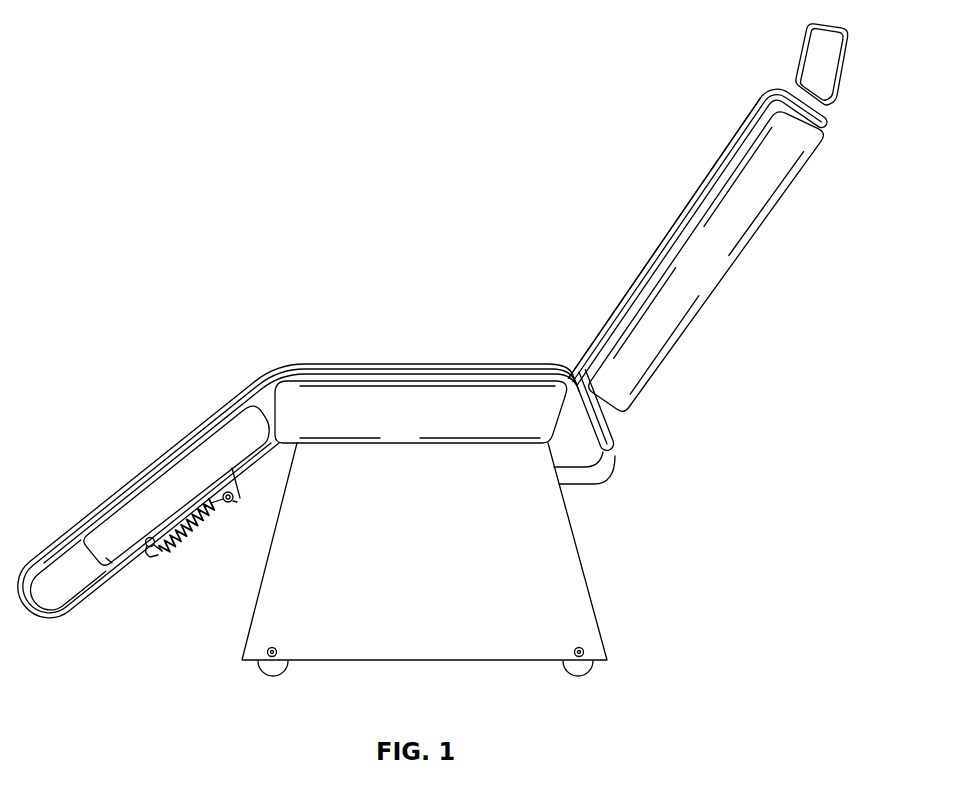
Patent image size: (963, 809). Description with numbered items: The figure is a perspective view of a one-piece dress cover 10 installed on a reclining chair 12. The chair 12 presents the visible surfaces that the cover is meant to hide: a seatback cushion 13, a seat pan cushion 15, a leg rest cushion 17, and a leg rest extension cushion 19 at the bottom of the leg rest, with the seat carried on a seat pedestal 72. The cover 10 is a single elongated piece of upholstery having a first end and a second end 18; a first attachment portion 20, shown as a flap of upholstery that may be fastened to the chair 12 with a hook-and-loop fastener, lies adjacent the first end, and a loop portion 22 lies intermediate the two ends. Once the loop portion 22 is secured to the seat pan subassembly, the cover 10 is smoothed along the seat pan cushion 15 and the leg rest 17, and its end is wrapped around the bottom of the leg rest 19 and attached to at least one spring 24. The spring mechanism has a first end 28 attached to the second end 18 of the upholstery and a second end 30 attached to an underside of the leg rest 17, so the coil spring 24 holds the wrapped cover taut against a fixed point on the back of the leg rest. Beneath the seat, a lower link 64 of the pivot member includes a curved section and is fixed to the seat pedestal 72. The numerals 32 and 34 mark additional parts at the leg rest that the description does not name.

The one-piece cover 10 is at (400, 363).
The chair 12 is at (733, 313).
The seatback cushion 13 is at (728, 268).
The seat pan cushion 15 is at (428, 428).
The leg rest cushion 17 is at (199, 489).
The second end 18 is at (145, 557).
The leg rest extension cushion 19 is at (81, 585).
The first attachment portion 20 is at (826, 117).
The loop portion 22 is at (612, 432).
The spring 24 is at (207, 528).
The first end 28 is at (160, 549).
The second end 30 is at (237, 502).
The bracket pin 32 is at (227, 483).
The stop 34 is at (108, 560).
The lower link 64 is at (597, 475).
The seat pedestal 72 is at (567, 573).